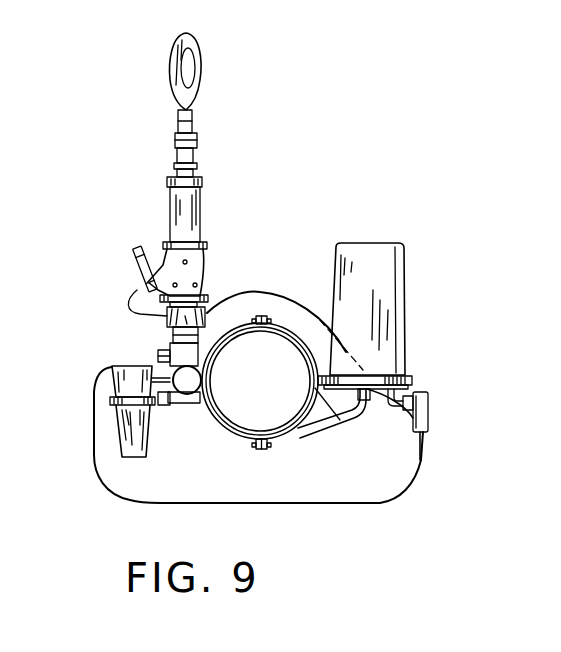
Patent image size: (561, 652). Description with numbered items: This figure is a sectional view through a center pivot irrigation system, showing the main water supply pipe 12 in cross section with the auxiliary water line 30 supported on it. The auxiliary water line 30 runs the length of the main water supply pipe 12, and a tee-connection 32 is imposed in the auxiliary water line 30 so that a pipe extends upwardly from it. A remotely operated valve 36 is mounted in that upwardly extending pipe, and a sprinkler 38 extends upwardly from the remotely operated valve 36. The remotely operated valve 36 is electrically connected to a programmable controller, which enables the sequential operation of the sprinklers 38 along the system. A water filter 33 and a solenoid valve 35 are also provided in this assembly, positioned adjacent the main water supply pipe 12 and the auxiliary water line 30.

The main water supply pipe 12 is at (340, 420).
The auxiliary water line 30 is at (185, 388).
The tee-connection 32 is at (200, 348).
The water filter 33 is at (133, 425).
The solenoid valve 35 is at (432, 403).
The remotely operated valve 36 is at (207, 261).
The sprinkler 38 is at (197, 152).